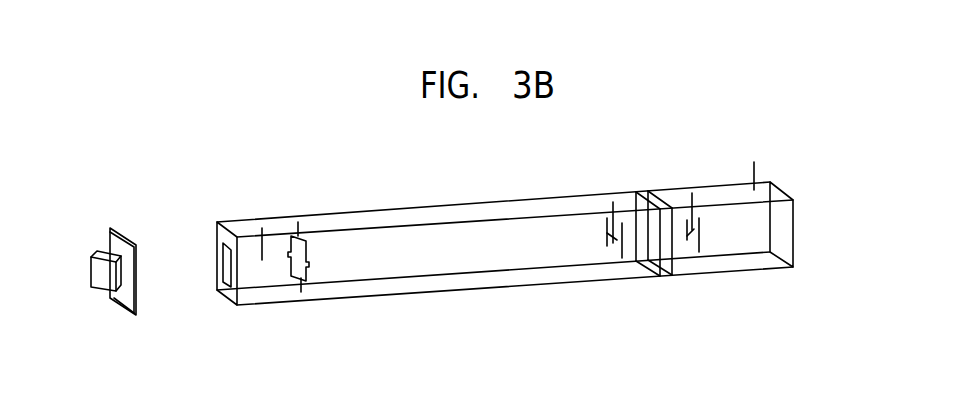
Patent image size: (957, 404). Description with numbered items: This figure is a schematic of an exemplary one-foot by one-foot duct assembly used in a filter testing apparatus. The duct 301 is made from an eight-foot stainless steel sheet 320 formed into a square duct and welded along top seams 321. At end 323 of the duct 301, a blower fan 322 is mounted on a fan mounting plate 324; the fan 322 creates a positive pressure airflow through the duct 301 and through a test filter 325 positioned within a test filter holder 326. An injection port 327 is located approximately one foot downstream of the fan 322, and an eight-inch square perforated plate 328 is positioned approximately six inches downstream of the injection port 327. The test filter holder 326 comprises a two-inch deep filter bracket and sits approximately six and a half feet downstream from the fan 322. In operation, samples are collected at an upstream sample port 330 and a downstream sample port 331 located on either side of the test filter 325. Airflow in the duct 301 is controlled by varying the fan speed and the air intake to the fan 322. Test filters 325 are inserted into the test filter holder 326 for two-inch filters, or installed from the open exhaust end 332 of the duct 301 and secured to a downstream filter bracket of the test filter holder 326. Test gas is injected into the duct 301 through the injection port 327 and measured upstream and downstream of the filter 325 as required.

The duct 301 is at (200, 172).
The stainless steel sheet 320 is at (478, 210).
The top seams 321 is at (522, 233).
The blower fan 322 is at (97, 288).
The end 323 is at (247, 307).
The fan mounting plate 324 is at (130, 312).
The test filter 325 is at (665, 272).
The test filter holder 326 is at (672, 230).
The injection port 327 is at (260, 238).
The perforated plate 328 is at (302, 283).
The upstream sample port 330 is at (617, 240).
The downstream sample port 331 is at (688, 238).
The open exhaust end 332 is at (785, 235).